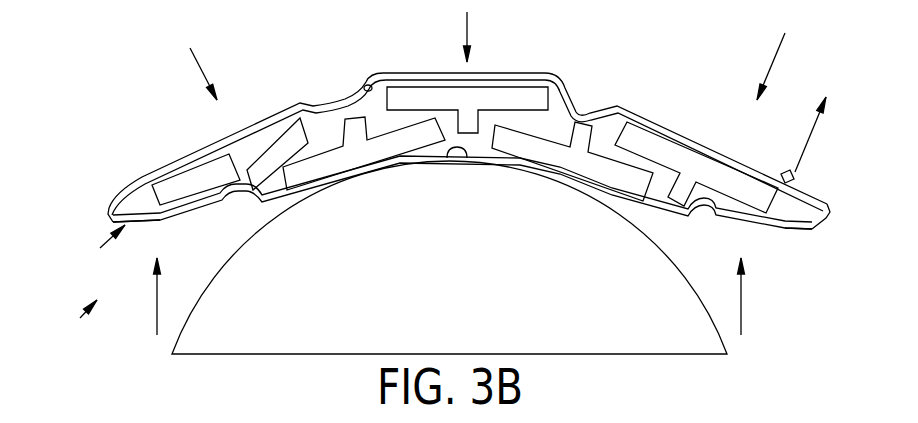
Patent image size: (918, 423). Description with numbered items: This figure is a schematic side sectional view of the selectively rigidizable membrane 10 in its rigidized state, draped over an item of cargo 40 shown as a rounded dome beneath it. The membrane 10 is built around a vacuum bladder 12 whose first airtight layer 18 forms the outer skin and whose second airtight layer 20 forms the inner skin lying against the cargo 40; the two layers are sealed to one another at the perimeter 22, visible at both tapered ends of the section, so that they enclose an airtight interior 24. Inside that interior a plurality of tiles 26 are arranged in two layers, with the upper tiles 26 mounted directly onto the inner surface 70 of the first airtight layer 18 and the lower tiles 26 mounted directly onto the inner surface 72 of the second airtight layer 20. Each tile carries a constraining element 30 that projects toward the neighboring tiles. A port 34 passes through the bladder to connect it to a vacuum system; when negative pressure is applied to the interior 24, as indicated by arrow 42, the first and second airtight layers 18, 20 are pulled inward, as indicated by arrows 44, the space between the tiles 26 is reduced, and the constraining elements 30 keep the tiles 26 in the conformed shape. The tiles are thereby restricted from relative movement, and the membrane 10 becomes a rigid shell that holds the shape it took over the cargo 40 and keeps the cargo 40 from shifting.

The selectively rigidizable membrane 10 is at (80, 318).
The vacuum bladder 12 is at (100, 248).
The first airtight layer 18 is at (165, 174).
The second airtight layer 20 is at (160, 222).
The perimeter 22 is at (110, 208).
The airtight interior 24 is at (140, 200).
The tiles 26 is at (200, 177).
The constraining element 30 is at (355, 128).
The port 34 is at (792, 180).
The cargo 40 is at (437, 289).
The arrow 42 is at (810, 138).
The arrows 44 is at (199, 64).
The inner surface of the first airtight layer 70 is at (368, 85).
The inner surface of the second airtight layer 72 is at (462, 152).